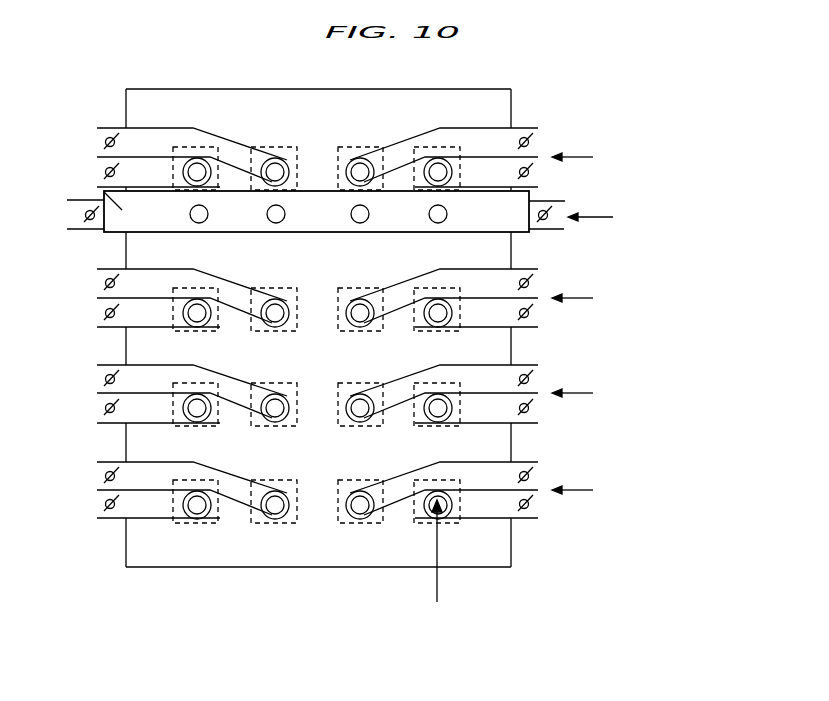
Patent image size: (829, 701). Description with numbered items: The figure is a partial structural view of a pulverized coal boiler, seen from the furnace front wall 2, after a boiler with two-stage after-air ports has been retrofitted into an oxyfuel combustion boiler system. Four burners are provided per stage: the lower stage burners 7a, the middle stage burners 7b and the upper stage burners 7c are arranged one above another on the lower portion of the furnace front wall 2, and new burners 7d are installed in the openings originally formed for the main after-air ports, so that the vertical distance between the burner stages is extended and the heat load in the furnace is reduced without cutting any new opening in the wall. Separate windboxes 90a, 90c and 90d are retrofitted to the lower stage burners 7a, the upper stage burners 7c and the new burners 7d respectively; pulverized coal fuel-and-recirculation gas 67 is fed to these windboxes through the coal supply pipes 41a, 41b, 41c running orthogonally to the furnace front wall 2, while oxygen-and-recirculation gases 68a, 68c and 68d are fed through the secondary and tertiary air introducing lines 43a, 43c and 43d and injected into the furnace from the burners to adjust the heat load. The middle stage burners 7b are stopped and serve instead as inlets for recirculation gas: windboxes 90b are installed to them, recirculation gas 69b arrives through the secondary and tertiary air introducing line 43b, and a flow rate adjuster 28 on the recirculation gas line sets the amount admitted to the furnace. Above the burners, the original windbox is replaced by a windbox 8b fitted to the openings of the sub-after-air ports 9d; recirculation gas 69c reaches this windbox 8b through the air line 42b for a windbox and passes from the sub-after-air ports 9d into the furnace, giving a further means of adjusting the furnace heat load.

The furnace front wall 2 is at (512, 256).
The lower stage burners 7a is at (347, 507).
The middle stage burners 7b is at (348, 409).
The upper stage burners 7c is at (348, 315).
The new burners 7d is at (358, 157).
The windbox 8b is at (104, 190).
The sub-after-air ports 9d is at (351, 217).
The flow rate adjuster 28 is at (560, 219).
The coal supply pipe 41a is at (438, 553).
The coal supply pipe 41b is at (437, 404).
The coal supply pipe 41c is at (437, 309).
The air line for a windbox 42b is at (75, 230).
The secondary and tertiary air introducing line 43a is at (238, 478).
The secondary and tertiary air introducing line 43b is at (238, 381).
The secondary and tertiary air introducing line 43c is at (238, 286).
The secondary and tertiary air introducing line 43d is at (238, 145).
The pulverized coal fuel-and-recirculation gas 67 is at (436, 582).
The oxygen-and-recirculation gas 68a is at (568, 490).
The oxygen-and-recirculation gas 68c is at (568, 298).
The oxygen-and-recirculation gas 68d is at (568, 157).
The recirculation gas 69b is at (568, 394).
The recirculation gas 69c is at (677, 219).
The windbox 90a is at (198, 481).
The windbox 90b is at (198, 384).
The windbox 90c is at (198, 289).
The windbox 90d is at (198, 147).